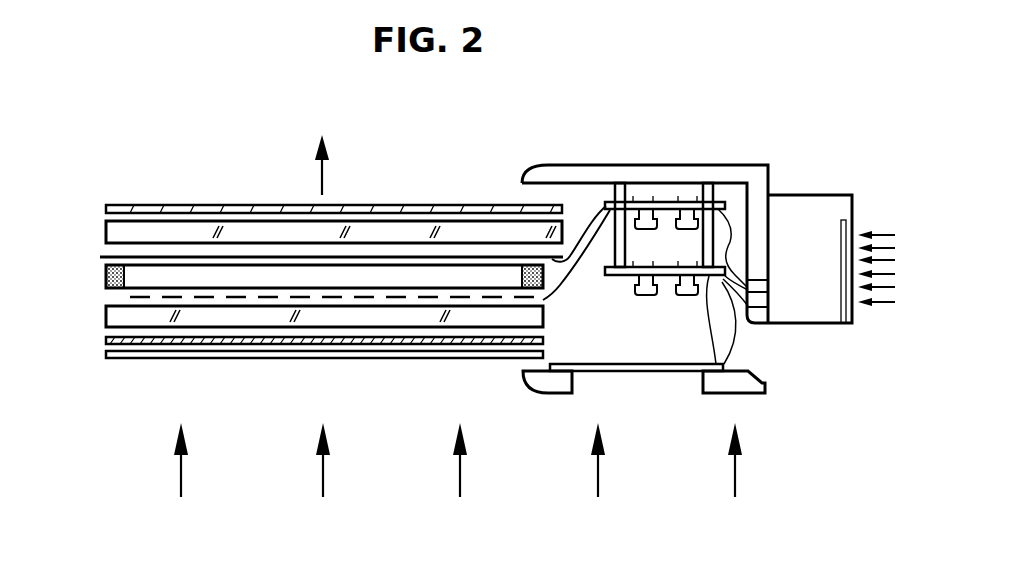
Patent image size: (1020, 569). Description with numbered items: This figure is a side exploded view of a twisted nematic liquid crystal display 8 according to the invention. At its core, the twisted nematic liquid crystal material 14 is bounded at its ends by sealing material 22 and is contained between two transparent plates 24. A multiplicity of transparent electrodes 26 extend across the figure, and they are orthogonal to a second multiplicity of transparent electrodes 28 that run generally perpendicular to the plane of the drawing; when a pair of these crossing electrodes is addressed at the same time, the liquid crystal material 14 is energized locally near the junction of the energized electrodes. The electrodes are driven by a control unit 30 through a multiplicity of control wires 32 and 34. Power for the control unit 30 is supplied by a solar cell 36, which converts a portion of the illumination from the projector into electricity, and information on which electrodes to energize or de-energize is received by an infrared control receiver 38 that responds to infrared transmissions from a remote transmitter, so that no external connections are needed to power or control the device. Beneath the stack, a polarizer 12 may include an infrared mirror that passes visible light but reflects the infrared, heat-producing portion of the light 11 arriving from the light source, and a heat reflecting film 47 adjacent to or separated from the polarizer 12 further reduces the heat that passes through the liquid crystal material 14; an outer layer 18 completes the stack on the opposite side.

The display assembly 8 is at (462, 152).
The light 11 is at (357, 484).
The polarizer 12 is at (107, 340).
The twisted nematic liquid crystal material 14 is at (324, 276).
The front polarizer 18 is at (107, 209).
The sealing material 22 is at (107, 277).
The transparent plates 24 is at (107, 230).
The transparent electrodes 26 is at (100, 257).
The transparent electrodes 28 is at (123, 298).
The control unit 30 is at (670, 203).
The control wires 32 is at (577, 245).
The control wires 34 is at (575, 272).
The solar cell 36 is at (724, 367).
The infrared control receiver 38 is at (788, 316).
The heat reflecting film 47 is at (452, 361).